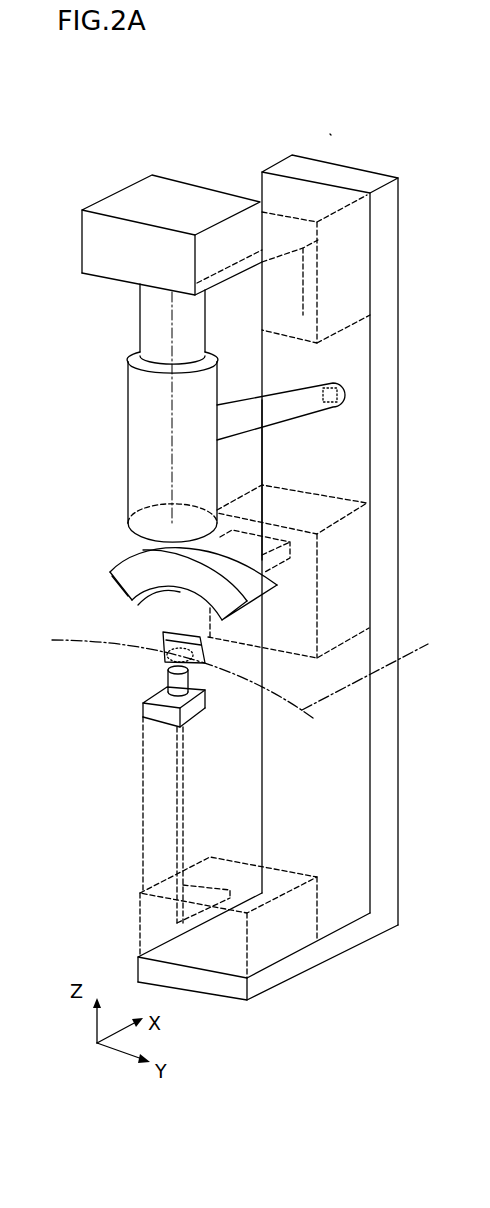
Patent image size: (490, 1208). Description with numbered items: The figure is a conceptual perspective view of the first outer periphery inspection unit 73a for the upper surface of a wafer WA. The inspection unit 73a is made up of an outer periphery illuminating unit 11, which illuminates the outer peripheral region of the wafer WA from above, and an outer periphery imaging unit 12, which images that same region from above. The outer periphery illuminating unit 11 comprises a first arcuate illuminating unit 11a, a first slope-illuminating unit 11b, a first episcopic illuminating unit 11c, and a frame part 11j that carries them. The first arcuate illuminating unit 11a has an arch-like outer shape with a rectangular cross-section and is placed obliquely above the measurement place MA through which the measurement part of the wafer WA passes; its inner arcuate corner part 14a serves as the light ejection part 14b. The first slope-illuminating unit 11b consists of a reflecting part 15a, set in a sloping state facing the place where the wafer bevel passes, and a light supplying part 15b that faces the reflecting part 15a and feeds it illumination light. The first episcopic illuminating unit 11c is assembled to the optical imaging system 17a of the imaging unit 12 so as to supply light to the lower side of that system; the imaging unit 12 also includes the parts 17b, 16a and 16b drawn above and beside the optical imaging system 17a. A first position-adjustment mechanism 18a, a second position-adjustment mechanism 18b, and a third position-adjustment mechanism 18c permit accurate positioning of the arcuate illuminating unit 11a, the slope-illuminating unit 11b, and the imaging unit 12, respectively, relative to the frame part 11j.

The outer periphery illuminating unit 11 is at (306, 576).
The first arcuate illuminating unit 11a is at (118, 588).
The first slope-illuminating unit 11b is at (130, 622).
The first episcopic illuminating unit 11c is at (245, 423).
The frame part 11j is at (398, 750).
The outer periphery imaging unit 12 is at (88, 182).
The arcuate corner part 14a is at (110, 572).
The light ejection part 14b is at (143, 604).
The reflecting part 15a is at (203, 655).
The light supplying part 15b is at (197, 707).
The arm 16a is at (298, 418).
The connection hole 16b is at (340, 400).
The optical imaging system 17a is at (205, 388).
The block 17b is at (182, 200).
The first position-adjustment mechanism 18a is at (369, 502).
The second position-adjustment mechanism 18b is at (318, 915).
The third position-adjustment mechanism 18c is at (340, 208).
The first outer periphery inspection unit 73a is at (328, 130).
The measurement place MA is at (182, 679).
The wafer WA is at (377, 665).